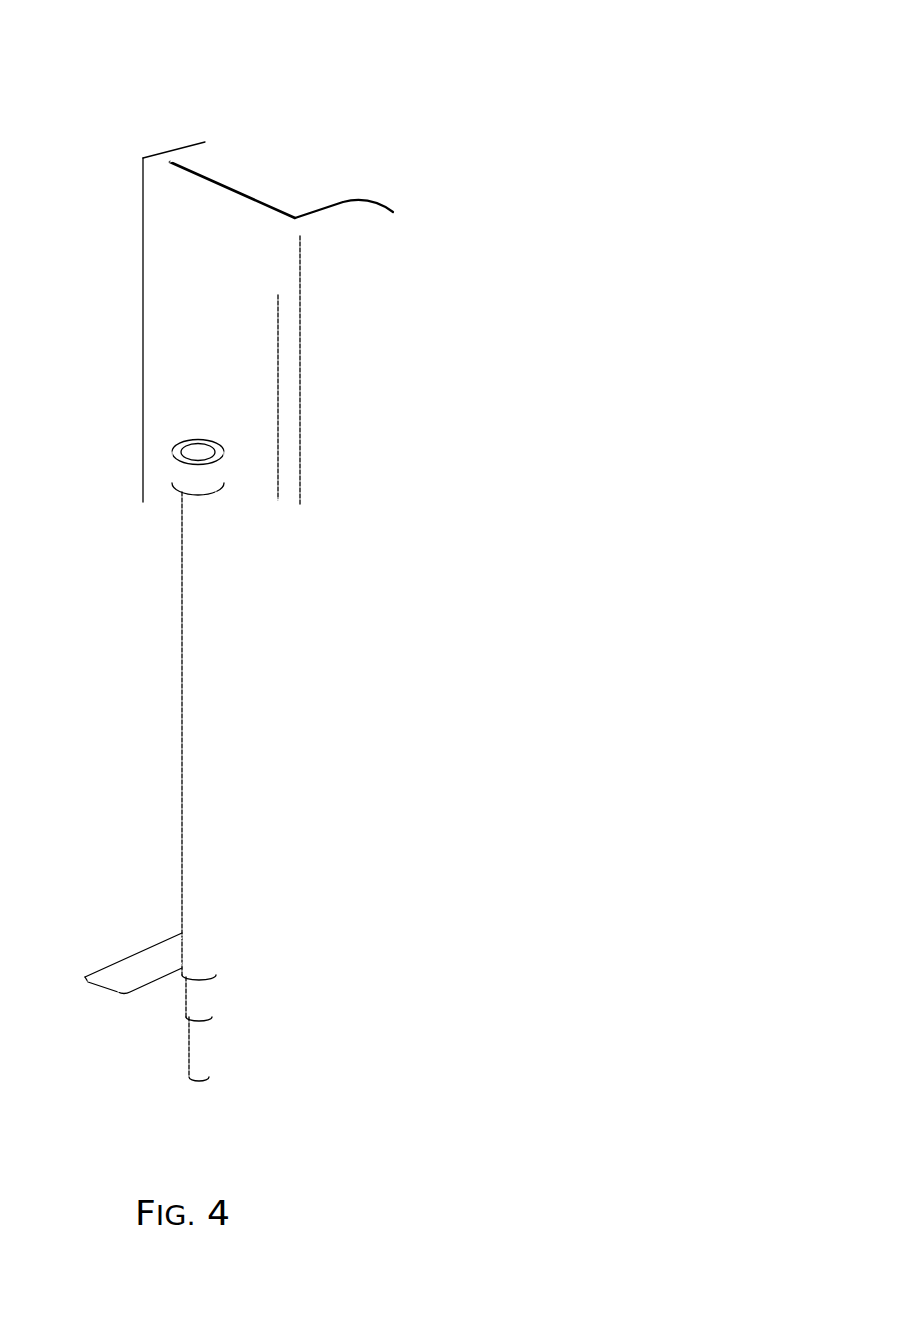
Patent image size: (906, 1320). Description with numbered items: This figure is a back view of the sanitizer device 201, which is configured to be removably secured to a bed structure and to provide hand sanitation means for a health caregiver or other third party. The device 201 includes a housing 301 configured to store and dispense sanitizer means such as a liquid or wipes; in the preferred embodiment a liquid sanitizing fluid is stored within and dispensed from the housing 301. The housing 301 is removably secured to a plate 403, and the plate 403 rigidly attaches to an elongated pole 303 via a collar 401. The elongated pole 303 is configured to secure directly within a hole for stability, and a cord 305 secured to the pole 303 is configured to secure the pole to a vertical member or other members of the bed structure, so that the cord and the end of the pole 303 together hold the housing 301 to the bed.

The sanitizer device 201 is at (513, 85).
The housing 301 is at (183, 147).
The elongated pole 303 is at (217, 733).
The cord 305 is at (135, 950).
The collar 401 is at (167, 465).
The plate 403 is at (157, 340).